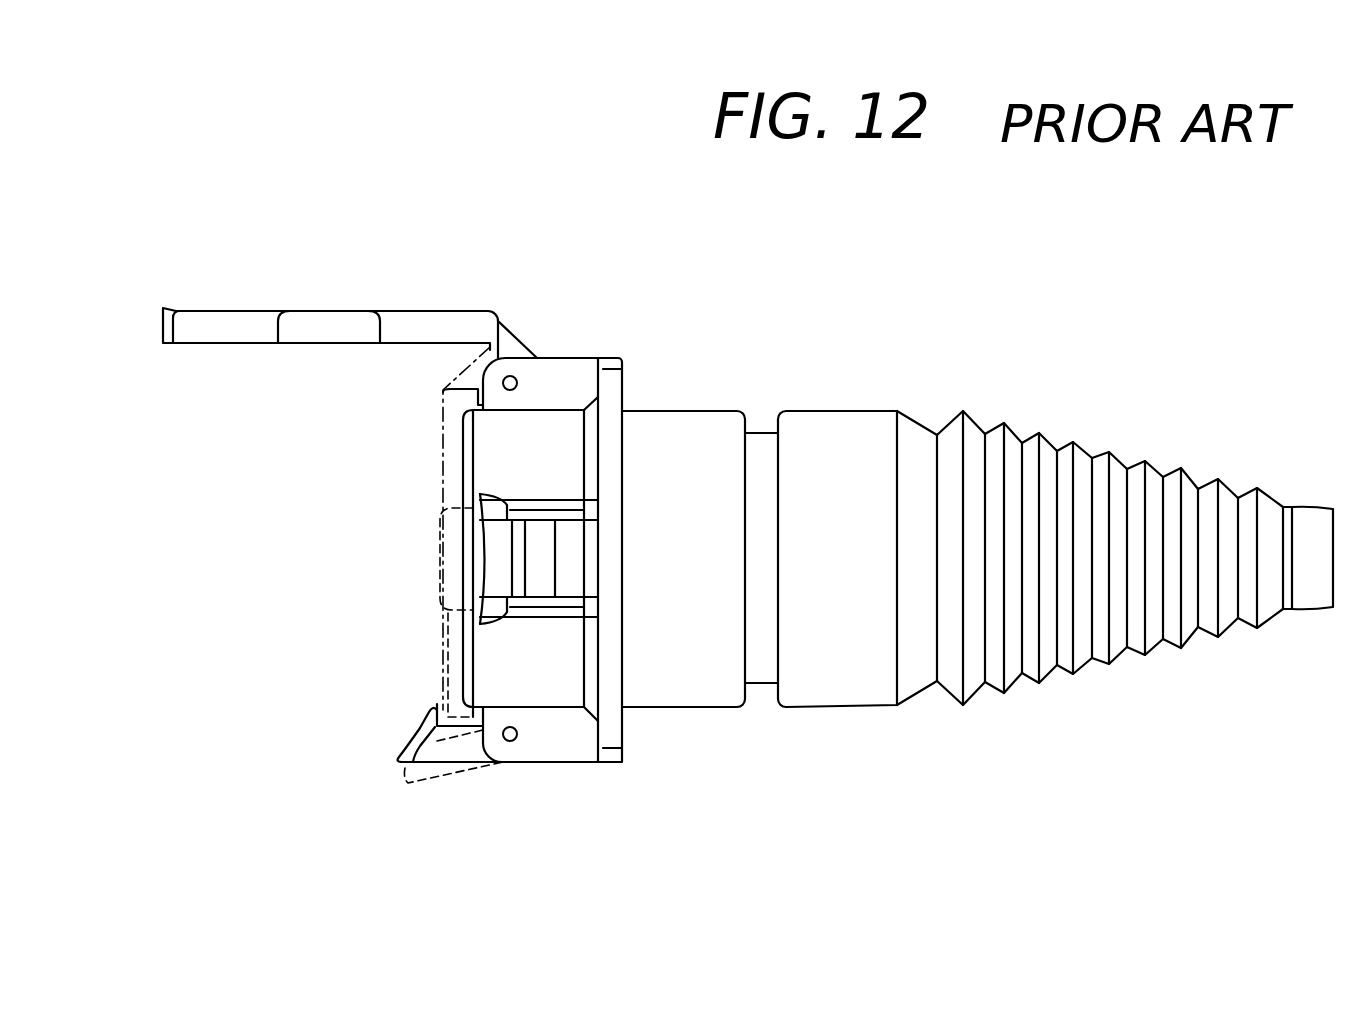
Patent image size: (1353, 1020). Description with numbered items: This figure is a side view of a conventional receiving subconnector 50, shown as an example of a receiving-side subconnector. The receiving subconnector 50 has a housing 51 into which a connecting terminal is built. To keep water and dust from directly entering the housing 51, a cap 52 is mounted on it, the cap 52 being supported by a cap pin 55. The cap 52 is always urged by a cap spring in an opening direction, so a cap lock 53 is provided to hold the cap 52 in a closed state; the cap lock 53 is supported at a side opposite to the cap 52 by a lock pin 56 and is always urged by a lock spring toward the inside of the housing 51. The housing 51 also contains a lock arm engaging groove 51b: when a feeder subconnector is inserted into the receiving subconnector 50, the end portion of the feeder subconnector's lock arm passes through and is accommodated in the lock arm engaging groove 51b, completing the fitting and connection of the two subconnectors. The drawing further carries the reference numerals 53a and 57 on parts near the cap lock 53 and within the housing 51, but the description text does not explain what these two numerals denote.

The receiving subconnector 50 is at (1027, 245).
The housing 51 is at (687, 418).
The lock arm engaging groove 51b is at (570, 557).
The cap 52 is at (443, 320).
The cap lock 53 is at (452, 752).
The hook tip 53a is at (432, 708).
The cap pin 55 is at (517, 383).
The lock pin 56 is at (513, 748).
The lock rail 57 is at (537, 537).